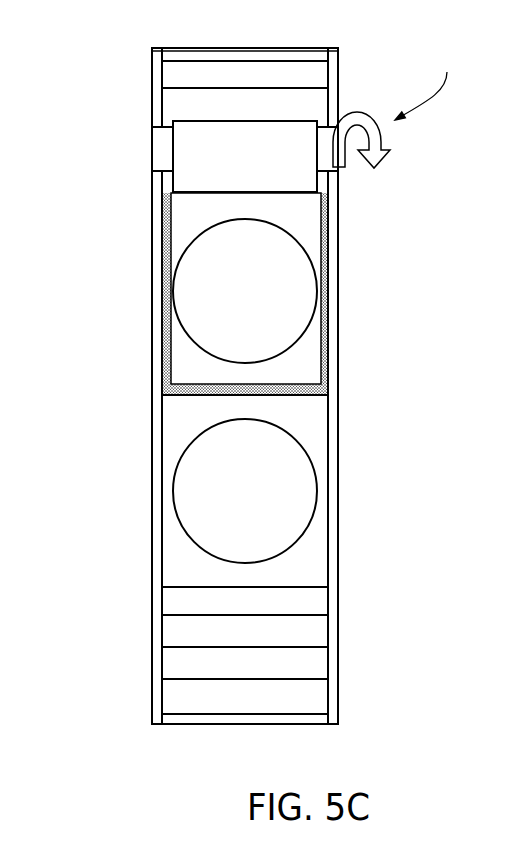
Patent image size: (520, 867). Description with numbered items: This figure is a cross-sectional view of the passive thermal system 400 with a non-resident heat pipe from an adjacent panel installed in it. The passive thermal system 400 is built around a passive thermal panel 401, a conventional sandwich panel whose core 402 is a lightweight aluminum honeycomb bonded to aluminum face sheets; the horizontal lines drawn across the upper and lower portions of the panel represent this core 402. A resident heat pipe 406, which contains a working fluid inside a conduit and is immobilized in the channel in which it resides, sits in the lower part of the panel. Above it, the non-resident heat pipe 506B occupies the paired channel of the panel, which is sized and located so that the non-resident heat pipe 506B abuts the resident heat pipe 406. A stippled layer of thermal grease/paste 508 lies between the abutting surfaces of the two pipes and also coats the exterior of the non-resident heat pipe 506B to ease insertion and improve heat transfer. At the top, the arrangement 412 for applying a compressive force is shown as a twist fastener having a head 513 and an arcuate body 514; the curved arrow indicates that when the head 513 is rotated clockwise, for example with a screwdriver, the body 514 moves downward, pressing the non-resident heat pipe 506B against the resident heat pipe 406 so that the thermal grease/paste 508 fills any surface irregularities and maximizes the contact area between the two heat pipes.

The passive thermal system 400 is at (410, 403).
The passive thermal panel 401 is at (355, 527).
The core 402 is at (236, 700).
The heat pipe 406 is at (313, 563).
The thermal grease/paste 508 is at (320, 390).
The non-resident heat pipe 506B is at (313, 222).
The body 514 is at (308, 128).
The head 513 is at (333, 167).
The arrangement for applying a compressive force 412 is at (427, 85).